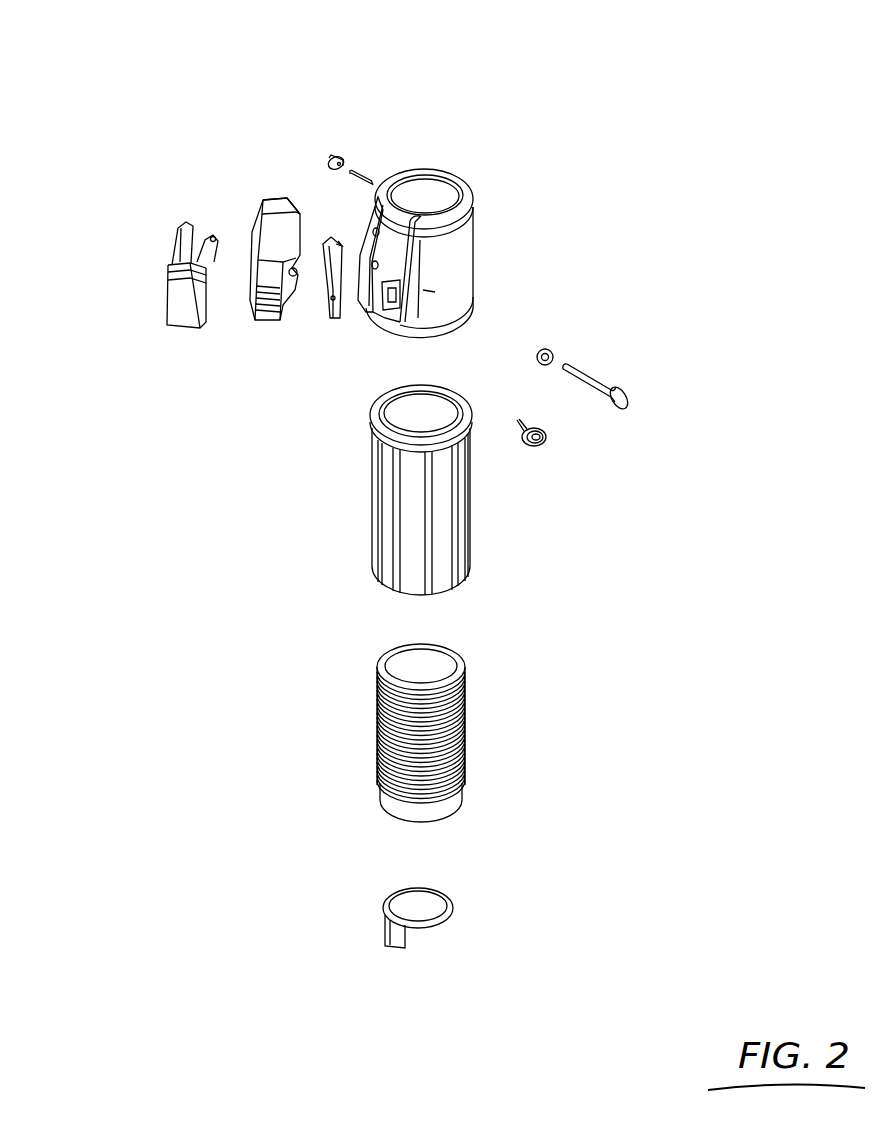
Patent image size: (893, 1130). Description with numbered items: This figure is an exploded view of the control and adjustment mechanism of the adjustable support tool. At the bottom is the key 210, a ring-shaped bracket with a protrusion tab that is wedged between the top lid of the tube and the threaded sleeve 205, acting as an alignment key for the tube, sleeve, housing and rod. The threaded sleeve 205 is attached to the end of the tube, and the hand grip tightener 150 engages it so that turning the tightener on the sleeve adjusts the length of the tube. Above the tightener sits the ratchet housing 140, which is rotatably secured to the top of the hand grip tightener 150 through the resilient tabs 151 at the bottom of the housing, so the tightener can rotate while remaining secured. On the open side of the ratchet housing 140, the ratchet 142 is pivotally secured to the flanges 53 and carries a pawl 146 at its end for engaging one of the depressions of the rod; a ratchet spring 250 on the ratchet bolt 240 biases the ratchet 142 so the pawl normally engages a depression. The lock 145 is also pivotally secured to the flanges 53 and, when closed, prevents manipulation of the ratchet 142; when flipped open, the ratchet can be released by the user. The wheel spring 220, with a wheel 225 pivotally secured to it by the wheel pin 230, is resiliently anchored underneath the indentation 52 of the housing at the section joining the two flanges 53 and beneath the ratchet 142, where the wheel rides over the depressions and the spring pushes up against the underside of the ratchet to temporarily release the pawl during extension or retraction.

The pawl 146 is at (287, 197).
The lock 145 is at (213, 236).
The ratchet 142 is at (277, 322).
The wheel spring 220 is at (325, 235).
The wheel 225 is at (343, 150).
The wheel pin 230 is at (366, 173).
The ratchet housing 140 is at (515, 279).
The indentation 52 is at (387, 313).
The flanges 53 is at (410, 315).
The resilient tabs 151 is at (455, 332).
The ratchet bolt 240 is at (555, 353).
The ratchet spring 250 is at (548, 443).
The hand grip tightener 150 is at (472, 542).
The threaded sleeve 205 is at (462, 763).
The key 210 is at (486, 922).